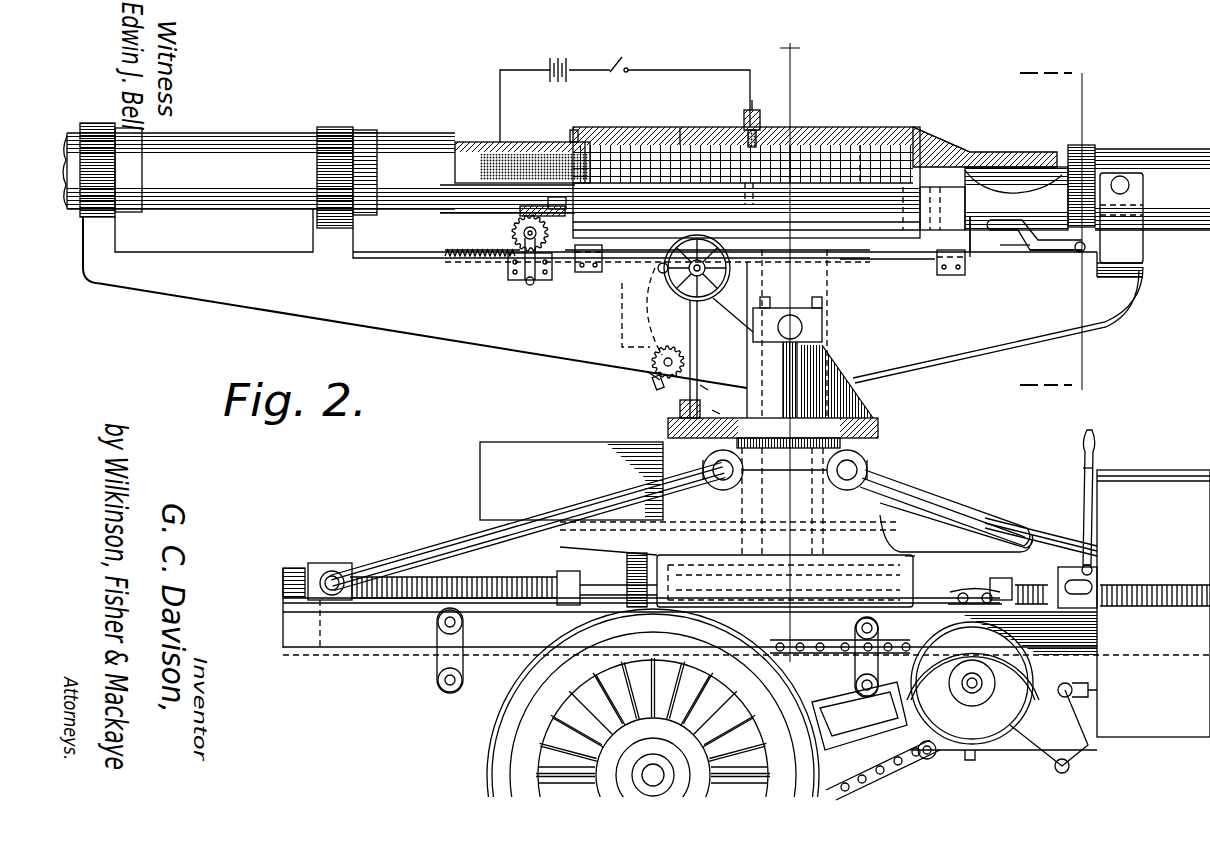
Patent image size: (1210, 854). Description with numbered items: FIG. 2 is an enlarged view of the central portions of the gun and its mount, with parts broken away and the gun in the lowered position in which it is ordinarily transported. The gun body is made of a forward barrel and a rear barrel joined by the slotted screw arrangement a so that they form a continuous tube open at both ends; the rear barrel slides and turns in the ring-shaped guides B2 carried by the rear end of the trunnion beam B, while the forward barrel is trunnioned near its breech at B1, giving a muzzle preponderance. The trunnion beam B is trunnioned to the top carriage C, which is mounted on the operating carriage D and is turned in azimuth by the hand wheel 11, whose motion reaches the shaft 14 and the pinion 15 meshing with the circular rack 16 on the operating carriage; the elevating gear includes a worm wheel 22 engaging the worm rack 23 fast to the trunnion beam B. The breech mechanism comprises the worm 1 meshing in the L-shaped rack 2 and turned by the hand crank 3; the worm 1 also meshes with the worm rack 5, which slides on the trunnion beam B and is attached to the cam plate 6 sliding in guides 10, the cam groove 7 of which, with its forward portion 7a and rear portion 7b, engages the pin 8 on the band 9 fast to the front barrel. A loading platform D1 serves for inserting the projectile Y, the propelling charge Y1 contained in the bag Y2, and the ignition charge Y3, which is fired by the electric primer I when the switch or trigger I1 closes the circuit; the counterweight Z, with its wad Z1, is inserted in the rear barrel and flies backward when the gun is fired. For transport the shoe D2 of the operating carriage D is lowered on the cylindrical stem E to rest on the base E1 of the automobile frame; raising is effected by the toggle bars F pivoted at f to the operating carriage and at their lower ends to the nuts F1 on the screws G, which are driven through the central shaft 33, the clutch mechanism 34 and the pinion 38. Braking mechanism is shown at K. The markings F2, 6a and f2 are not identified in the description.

The gun barrel F2 is at (255, 133).
The ring-shaped guides B2 is at (335, 127).
The trunnion beam B is at (1132, 312).
The trunnion of forward barrel B1 is at (1145, 263).
The bracket eye 6a is at (1124, 184).
The band 9 is at (1086, 148).
The counterweight Z is at (536, 142).
The slotted screw arrangement a is at (578, 130).
The wad Z1 is at (596, 138).
The propelling charge Y1 is at (856, 160).
The bag Y2 is at (892, 152).
The ignition charge Y3 is at (800, 148).
The projectile Y is at (985, 172).
The nuts F1 is at (940, 137).
The toggle bars F is at (680, 128).
The electric primer I is at (758, 112).
The switch or trigger I1 is at (622, 56).
The worm rack 5 is at (832, 629).
The cam plate 6 is at (803, 326).
The top carriage C is at (872, 406).
The hand wheel 11 is at (655, 295).
The shaft 14 is at (686, 366).
The pinion 15 is at (703, 390).
The circular rack 16 is at (715, 414).
The worm rack 23 is at (655, 376).
The worm wheel 22 is at (670, 386).
The L-shaped rack 2 is at (518, 210).
The worm 1 is at (513, 237).
The hand crank 3 is at (527, 278).
The guides 10 is at (585, 272).
The pin 8 is at (1088, 246).
The forward portion of slot 7a is at (1062, 250).
The cam groove 7 is at (1040, 246).
The rear portion of slot 7b is at (1012, 246).
The loading platform D1 is at (540, 442).
The pivot of toggle bars f is at (734, 470).
The pivot pin f2 is at (338, 578).
The screws G is at (420, 600).
The pinion 38 is at (626, 572).
The operating carriage D is at (882, 490).
The shoe D2 is at (926, 506).
The cylindrical stem E is at (1002, 518).
The base E1 is at (912, 556).
The central shaft 33 is at (1046, 583).
The clutch mechanism 34 is at (1090, 543).
The braking mechanism K is at (986, 722).